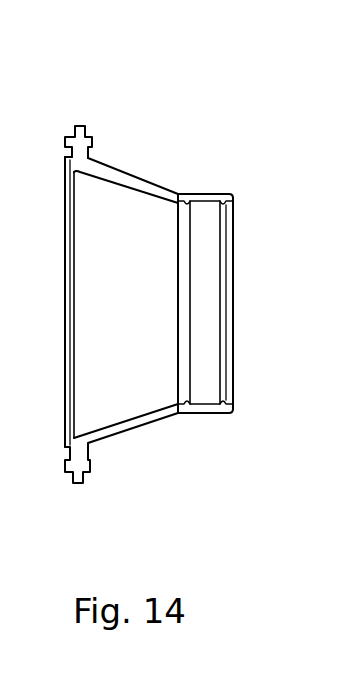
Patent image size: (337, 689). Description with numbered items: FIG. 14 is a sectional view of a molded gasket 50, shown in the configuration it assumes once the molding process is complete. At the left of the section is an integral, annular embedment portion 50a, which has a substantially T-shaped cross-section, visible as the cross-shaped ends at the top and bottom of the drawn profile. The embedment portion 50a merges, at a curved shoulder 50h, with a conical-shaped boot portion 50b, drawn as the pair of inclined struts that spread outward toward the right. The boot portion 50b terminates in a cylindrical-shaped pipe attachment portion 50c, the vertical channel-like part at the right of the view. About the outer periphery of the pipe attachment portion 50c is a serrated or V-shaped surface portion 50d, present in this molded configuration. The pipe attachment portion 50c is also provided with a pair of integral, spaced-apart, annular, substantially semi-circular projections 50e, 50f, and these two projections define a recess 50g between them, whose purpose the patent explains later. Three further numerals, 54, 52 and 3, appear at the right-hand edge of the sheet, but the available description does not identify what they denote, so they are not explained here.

The gasket 50 is at (167, 266).
The embedment portion 50a is at (61, 121).
The conical-shaped boot portion 50b is at (143, 182).
The cylindrical-shaped pipe attachment portion 50c is at (246, 194).
The serrated or V-shaped surface portion 50d is at (208, 193).
The semi-circular projection 50e is at (226, 243).
The semi-circular projection 50f is at (186, 333).
The recess 50g is at (210, 287).
The curved shoulder 50h is at (68, 158).
The element 54 is at (323, 355).
The element 52 is at (323, 414).
The element 3 is at (329, 520).